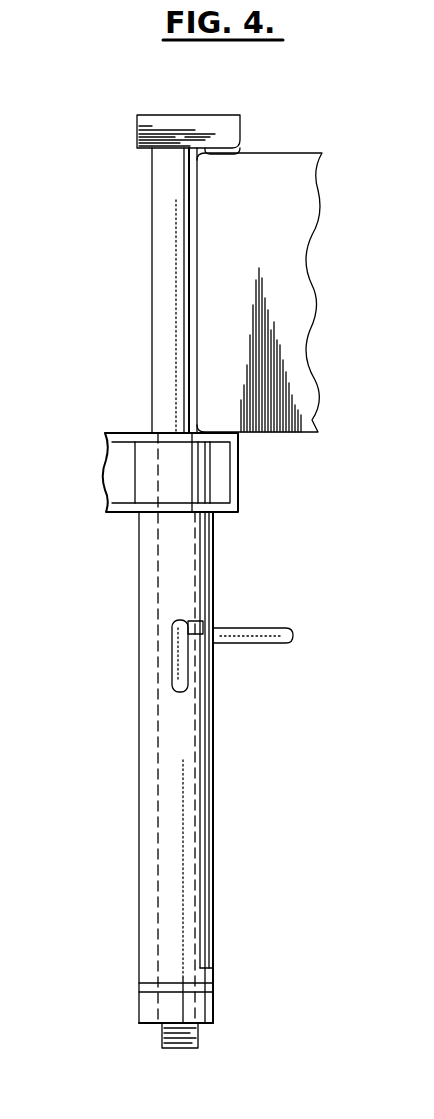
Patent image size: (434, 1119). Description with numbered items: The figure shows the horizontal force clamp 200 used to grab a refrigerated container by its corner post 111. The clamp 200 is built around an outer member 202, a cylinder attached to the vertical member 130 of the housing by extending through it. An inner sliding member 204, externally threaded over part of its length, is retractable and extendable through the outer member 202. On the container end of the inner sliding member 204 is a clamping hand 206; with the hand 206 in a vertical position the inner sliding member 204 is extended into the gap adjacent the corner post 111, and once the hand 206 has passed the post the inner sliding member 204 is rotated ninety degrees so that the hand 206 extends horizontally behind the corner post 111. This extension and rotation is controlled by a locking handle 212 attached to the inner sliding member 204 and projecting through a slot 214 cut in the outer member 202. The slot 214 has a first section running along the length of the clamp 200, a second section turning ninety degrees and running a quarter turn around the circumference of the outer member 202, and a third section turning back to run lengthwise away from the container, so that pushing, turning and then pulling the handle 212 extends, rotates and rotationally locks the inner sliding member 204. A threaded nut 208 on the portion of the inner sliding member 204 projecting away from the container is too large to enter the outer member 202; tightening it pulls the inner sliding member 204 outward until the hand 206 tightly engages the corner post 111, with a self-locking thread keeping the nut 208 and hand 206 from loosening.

The horizontal force clamp 200 is at (123, 683).
The outer member 202 is at (213, 773).
The inner sliding member 204 is at (165, 310).
The clamping hand 206 is at (226, 128).
The threaded nut 208 is at (217, 1003).
The locking handle 212 is at (293, 643).
The slot 214 is at (212, 625).
The vertical member 130 is at (238, 482).
The corner post 111 is at (277, 233).